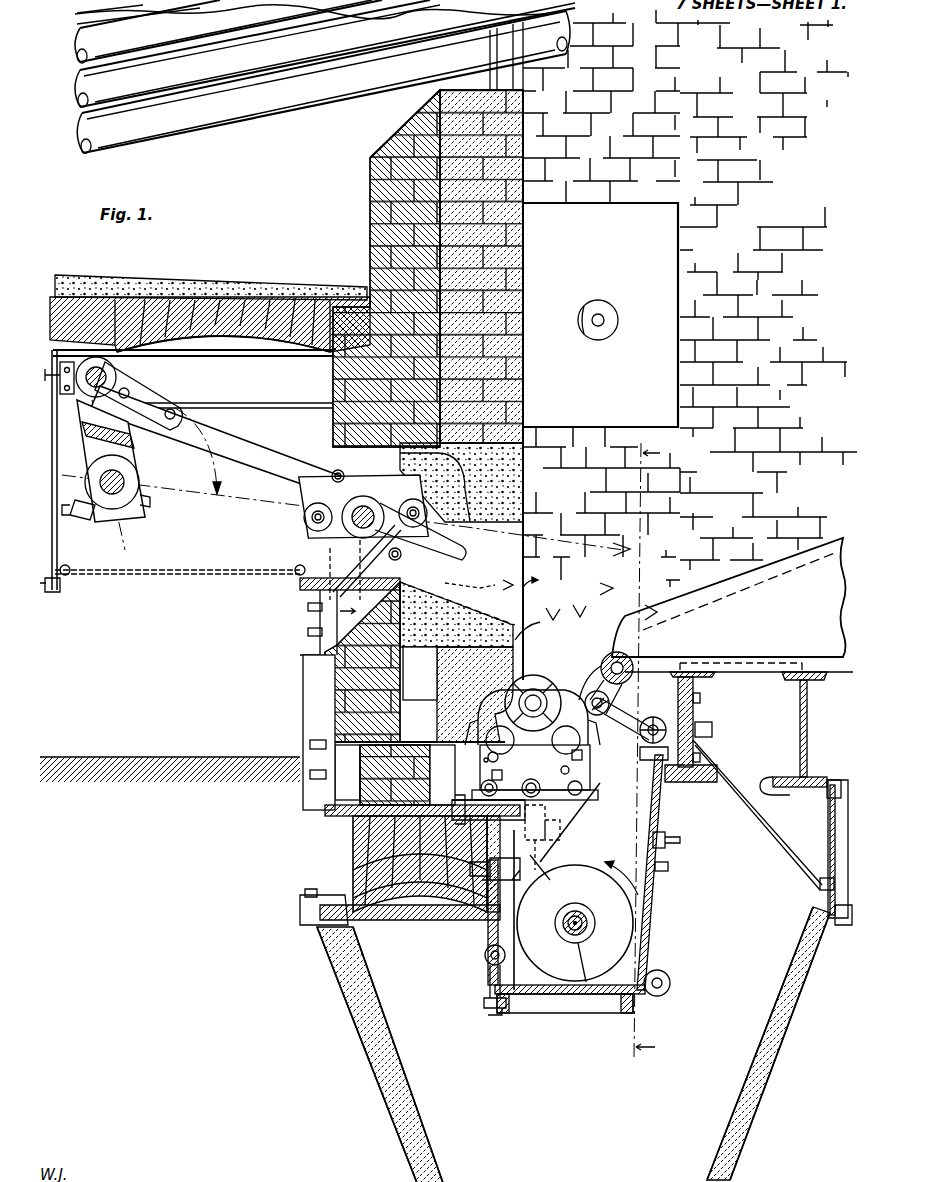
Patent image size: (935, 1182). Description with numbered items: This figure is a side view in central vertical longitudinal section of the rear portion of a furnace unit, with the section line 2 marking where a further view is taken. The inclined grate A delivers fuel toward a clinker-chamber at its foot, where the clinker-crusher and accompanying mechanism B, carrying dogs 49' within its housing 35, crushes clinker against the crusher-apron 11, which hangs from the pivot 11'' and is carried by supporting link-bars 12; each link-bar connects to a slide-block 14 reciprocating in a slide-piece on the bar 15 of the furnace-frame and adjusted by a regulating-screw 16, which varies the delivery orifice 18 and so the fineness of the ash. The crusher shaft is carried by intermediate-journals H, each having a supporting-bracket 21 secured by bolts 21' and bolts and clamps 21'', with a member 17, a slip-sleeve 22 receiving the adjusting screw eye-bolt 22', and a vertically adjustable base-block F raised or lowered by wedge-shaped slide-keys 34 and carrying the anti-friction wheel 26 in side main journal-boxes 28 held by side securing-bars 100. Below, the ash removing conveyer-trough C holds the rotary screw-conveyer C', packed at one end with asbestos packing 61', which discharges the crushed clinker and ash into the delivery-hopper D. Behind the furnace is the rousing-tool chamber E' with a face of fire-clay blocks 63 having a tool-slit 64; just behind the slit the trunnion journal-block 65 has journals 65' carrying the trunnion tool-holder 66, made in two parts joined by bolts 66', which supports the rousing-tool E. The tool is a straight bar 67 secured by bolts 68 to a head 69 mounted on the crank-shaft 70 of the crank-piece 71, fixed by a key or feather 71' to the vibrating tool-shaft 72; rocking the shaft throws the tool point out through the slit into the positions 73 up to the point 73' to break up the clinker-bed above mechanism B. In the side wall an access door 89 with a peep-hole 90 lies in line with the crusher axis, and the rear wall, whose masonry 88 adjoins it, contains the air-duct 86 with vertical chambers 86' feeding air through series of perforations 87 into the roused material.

The crank-shaft 70 is at (108, 375).
The head 69 is at (160, 412).
The bolts 68 is at (178, 412).
The crank-piece 71 is at (123, 461).
The key or feather 71' is at (131, 482).
The vibrating tool-shaft 72 is at (133, 510).
The straight bar 67 is at (222, 451).
The clinker rousing-tool E is at (234, 447).
The rousing-tool chamber E' is at (186, 471).
The trunnion tool-holder 66 is at (364, 506).
The bolts 66' is at (366, 515).
The trunnion journal-block 65 is at (336, 561).
The journals 65' is at (345, 570).
The tool-slit 64 is at (430, 531).
The fire-clay blocks 63 is at (523, 484).
The chambers 86' is at (411, 570).
The packing 61' is at (457, 595).
The positions 73 is at (563, 594).
The point 73' is at (638, 541).
The passages or perforations 87 is at (531, 599).
The section line 2 is at (653, 750).
The access door 89 is at (600, 315).
The peep-hole 90 is at (604, 320).
The air-duct 86 is at (458, 694).
The masonry 88 is at (442, 775).
The grate A is at (729, 597).
The hub 11'' is at (617, 655).
The crusher-apron 11 is at (594, 690).
The supporting link-bars 12 is at (622, 718).
The slide-block 14 is at (665, 722).
The bar of the furnace-frame 15 is at (698, 712).
The clinker-crusher B is at (540, 685).
The dogs 49' is at (533, 691).
The housing 35 is at (532, 708).
The base-block F is at (535, 767).
The anti-friction wheel 26 is at (503, 763).
The main journal-boxes 28 is at (522, 787).
The side securing-bars 100 is at (580, 772).
The delivery orifice 18 is at (582, 752).
The adjusting slide-keys 34 is at (598, 797).
The lever 17 is at (539, 809).
The bolts and clamps 21'' is at (488, 809).
The bolts 21' is at (499, 925).
The supporting-bracket 21 is at (605, 868).
The slip-sleeve 22 is at (553, 837).
The adjusting screw eye-bolt 22' is at (553, 872).
The intermediate-journals H is at (577, 822).
The ash removing conveyer-trough C is at (579, 884).
The rotary screw-conveyer C' is at (575, 923).
The regulating-screw 16 is at (668, 855).
The delivery-hopper D is at (569, 1100).